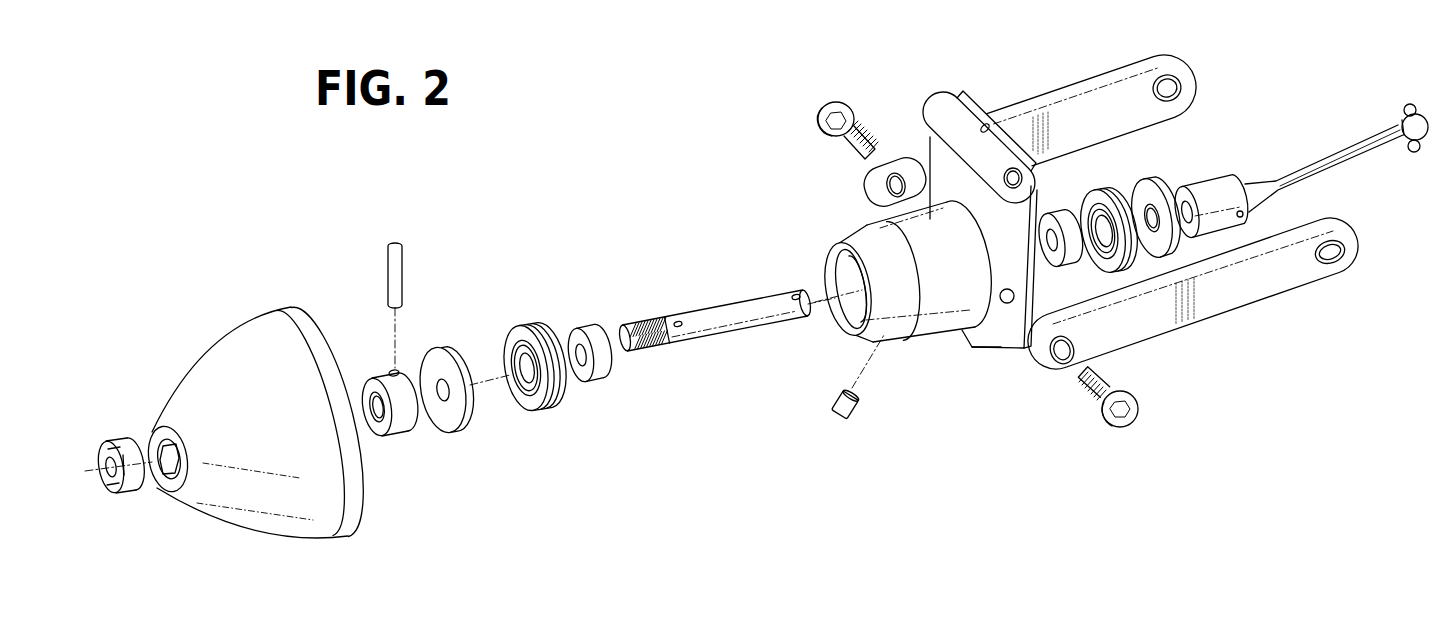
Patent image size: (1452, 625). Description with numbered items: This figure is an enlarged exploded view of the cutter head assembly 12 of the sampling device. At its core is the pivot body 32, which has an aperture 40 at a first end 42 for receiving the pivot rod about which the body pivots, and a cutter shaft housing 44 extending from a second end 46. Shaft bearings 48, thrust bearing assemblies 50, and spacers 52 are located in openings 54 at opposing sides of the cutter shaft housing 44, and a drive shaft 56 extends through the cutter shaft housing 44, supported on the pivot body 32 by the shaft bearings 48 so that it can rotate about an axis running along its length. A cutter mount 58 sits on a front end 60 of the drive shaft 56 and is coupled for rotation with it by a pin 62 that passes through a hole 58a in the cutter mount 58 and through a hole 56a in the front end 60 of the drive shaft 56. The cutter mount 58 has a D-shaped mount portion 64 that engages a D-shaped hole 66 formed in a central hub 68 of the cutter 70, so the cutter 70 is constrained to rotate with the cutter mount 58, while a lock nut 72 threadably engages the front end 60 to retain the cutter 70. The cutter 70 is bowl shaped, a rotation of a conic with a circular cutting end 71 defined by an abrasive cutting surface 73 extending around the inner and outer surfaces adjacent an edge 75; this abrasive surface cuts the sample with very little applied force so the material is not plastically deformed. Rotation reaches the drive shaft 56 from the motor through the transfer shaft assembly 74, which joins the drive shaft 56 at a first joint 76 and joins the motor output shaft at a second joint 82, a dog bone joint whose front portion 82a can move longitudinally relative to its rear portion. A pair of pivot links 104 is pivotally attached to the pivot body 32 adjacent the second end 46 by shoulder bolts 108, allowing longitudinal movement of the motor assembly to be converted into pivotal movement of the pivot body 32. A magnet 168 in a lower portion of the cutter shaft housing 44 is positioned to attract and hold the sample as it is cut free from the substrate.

The cutter head assembly 12 is at (773, 222).
The pivot body 32 is at (982, 235).
The aperture 40 is at (1020, 178).
The first end 42 is at (1005, 119).
The cutter shaft housing 44 is at (877, 311).
The second end 46 is at (995, 350).
The shaft bearings 48 is at (607, 368).
The thrust bearing assemblies 50 is at (557, 401).
The spacers 52 is at (470, 418).
The openings 54 is at (833, 275).
The drive shaft 56 is at (726, 321).
The hole 56a is at (678, 325).
The cutter mount 58 is at (392, 398).
The hole 58a is at (395, 368).
The front end 60 is at (665, 328).
The pin 62 is at (392, 271).
The D-shaped mount portion 64 is at (371, 388).
The D-shaped hole 66 is at (158, 478).
The central hub 68 is at (157, 430).
The cutter 70 is at (272, 426).
The cutting end 71 is at (272, 309).
The lock nut 72 is at (104, 489).
The abrasive cutting surface 73 is at (343, 524).
The transfer shaft assembly 74 is at (1344, 143).
The edge 75 is at (362, 495).
The first joint 76 is at (1210, 188).
The second joint 82 is at (1409, 143).
The front portion 82a is at (1419, 152).
The pivot links 104 is at (1080, 88).
The shoulder bolts 108 is at (820, 112).
The magnet 168 is at (860, 415).